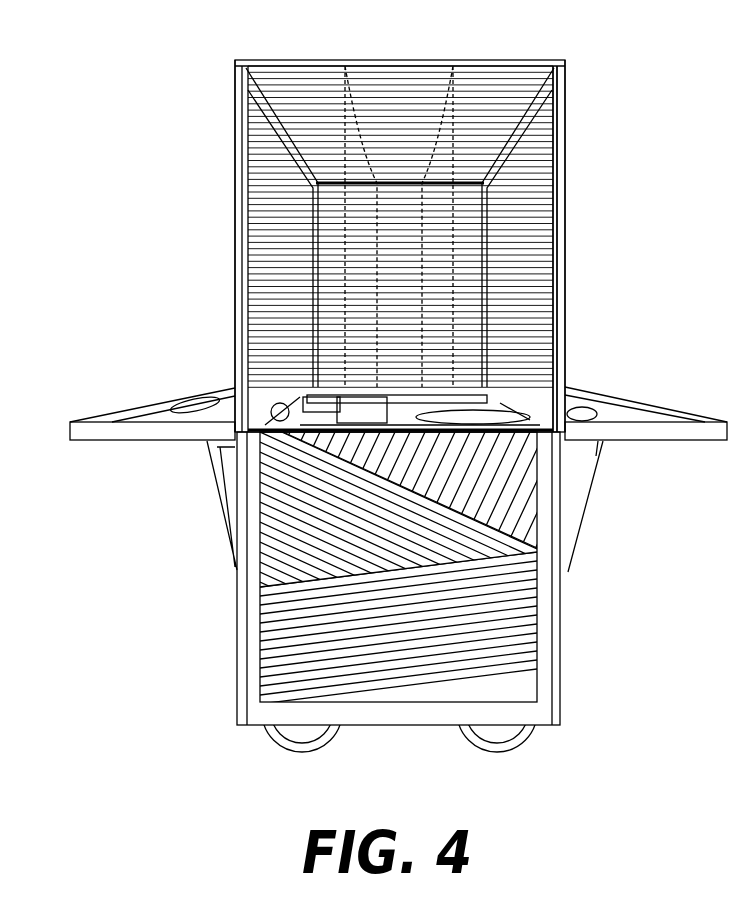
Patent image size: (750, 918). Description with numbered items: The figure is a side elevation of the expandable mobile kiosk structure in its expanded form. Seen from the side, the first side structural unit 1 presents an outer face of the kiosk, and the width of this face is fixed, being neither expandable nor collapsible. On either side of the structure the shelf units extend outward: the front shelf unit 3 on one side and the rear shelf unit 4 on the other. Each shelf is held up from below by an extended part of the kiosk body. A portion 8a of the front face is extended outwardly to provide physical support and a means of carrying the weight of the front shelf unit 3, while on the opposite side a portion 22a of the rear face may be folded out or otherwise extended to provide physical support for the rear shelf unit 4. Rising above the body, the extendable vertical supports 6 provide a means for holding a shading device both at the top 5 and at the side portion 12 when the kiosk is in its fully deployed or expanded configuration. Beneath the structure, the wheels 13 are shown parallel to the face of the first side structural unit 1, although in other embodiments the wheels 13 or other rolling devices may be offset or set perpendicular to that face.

The first side structural unit 1 is at (527, 641).
The front shelf unit 3 is at (131, 407).
The rear shelf unit 4 is at (686, 417).
The top 5 is at (493, 128).
The extendable vertical supports 6 is at (237, 173).
The portion of the front face 8a is at (218, 485).
The side portion 12 is at (543, 298).
The wheels 13 is at (273, 740).
The portion of the rear face 22a is at (585, 498).